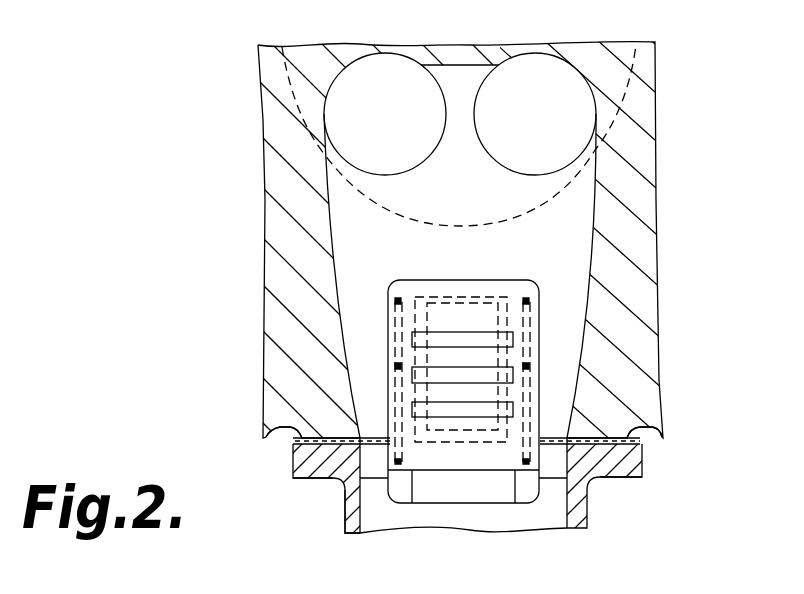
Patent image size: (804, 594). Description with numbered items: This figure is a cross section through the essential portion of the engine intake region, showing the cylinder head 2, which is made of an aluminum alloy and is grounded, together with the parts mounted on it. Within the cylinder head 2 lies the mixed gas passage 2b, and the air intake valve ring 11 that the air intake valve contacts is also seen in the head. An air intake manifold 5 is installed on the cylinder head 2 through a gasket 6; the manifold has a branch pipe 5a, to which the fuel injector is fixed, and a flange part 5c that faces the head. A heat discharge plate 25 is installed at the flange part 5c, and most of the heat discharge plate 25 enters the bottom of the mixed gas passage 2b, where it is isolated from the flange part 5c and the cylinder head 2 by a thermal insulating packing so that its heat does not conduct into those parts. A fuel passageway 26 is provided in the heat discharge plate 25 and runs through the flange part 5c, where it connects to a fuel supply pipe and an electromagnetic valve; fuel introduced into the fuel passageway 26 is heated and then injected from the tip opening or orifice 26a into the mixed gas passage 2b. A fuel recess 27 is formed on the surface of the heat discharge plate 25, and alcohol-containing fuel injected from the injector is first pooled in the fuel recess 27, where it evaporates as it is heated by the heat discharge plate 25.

The cylinder head 2 is at (657, 203).
The mixed gas passage 2b is at (557, 237).
The air intake manifold 5 is at (589, 518).
The branch pipe 5a is at (345, 525).
The flange part 5c is at (300, 469).
The gasket 6 is at (276, 432).
The air intake valve ring 11 is at (490, 151).
The heat discharge plate 25 is at (397, 279).
The fuel passageway 26 is at (394, 386).
The tip opening or orifice 26a is at (397, 364).
The fuel recess 27 is at (473, 372).